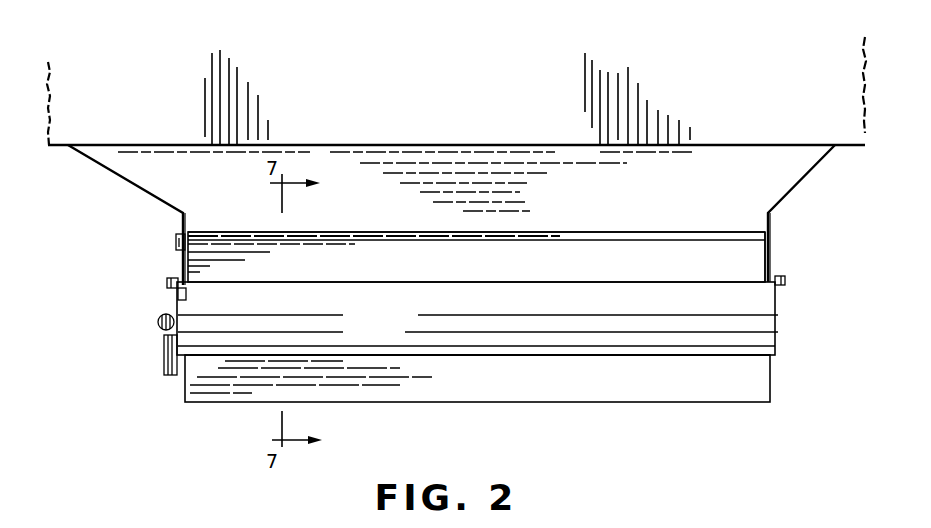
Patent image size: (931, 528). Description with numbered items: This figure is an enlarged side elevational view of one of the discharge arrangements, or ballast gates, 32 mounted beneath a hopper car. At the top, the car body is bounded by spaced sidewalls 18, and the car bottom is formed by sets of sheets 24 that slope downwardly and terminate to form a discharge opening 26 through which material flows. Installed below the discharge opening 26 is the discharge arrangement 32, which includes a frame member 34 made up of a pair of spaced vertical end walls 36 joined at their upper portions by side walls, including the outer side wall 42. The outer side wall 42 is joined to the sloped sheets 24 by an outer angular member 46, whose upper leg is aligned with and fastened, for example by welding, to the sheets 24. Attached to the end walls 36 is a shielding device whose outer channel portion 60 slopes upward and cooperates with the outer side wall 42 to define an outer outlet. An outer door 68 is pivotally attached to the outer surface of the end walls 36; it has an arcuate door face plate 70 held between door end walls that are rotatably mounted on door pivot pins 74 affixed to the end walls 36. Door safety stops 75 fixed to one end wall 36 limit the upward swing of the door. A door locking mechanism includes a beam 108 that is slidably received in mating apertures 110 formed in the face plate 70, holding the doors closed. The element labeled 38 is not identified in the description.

The sidewalls 18 is at (398, 103).
The sheets 24 is at (126, 182).
The discharge opening 26 is at (463, 211).
The discharge arrangement 32 is at (141, 444).
The frame member 34 is at (822, 238).
The end walls 36 is at (176, 260).
The end flange 38 is at (753, 248).
The outer side wall 42 is at (660, 273).
The outer angular member 46 is at (576, 238).
The outer channel portion 60 is at (469, 388).
The outer door 68 is at (582, 365).
The door face plate 70 is at (376, 334).
The door pivot pins 74 is at (166, 284).
The door safety stops 75 is at (176, 241).
The beam 108 is at (178, 300).
The apertures 110 is at (184, 293).